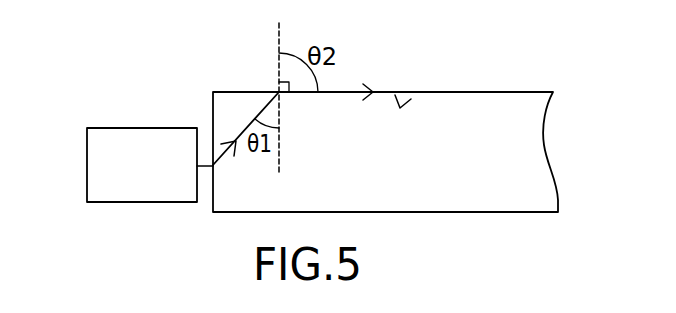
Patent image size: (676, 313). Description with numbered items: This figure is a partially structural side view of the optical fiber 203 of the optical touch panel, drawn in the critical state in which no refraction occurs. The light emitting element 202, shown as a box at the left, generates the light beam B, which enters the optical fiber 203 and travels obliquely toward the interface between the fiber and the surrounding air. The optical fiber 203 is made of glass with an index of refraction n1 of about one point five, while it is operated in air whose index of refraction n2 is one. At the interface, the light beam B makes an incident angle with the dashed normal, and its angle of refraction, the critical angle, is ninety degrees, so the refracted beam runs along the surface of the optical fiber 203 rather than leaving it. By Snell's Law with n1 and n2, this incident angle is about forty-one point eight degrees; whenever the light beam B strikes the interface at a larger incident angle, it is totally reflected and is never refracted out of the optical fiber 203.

The light emitting element 202 is at (133, 142).
The optical fiber 203 is at (400, 108).
The light beam B is at (240, 135).
The index of refraction of the glass n1 is at (385, 152).
The index of refraction of the air n2 is at (408, 77).